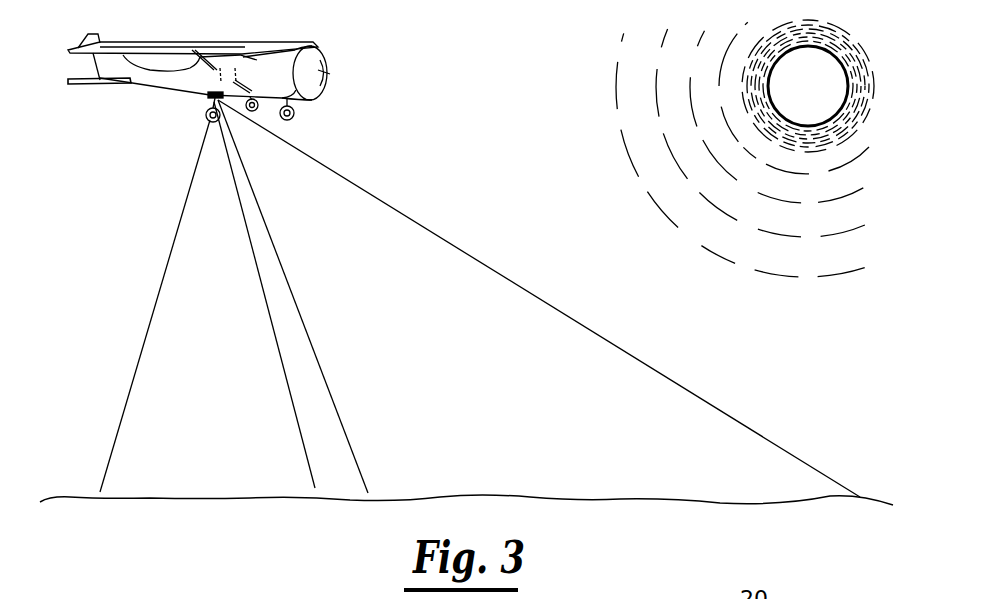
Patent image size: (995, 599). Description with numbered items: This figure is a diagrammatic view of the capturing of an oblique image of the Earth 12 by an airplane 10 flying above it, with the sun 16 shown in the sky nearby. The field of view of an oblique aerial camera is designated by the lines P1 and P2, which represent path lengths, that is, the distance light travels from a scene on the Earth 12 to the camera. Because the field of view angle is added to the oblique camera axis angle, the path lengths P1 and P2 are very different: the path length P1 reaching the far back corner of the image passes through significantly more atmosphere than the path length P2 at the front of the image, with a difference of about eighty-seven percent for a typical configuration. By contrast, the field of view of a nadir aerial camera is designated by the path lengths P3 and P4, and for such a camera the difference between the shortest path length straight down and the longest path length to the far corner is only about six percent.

The airplane 10 is at (212, 48).
The Earth 12 is at (603, 500).
The sun 16 is at (795, 110).
The path length P1 is at (583, 322).
The path length P2 is at (332, 393).
The path length P3 is at (277, 332).
The path length P4 is at (128, 397).